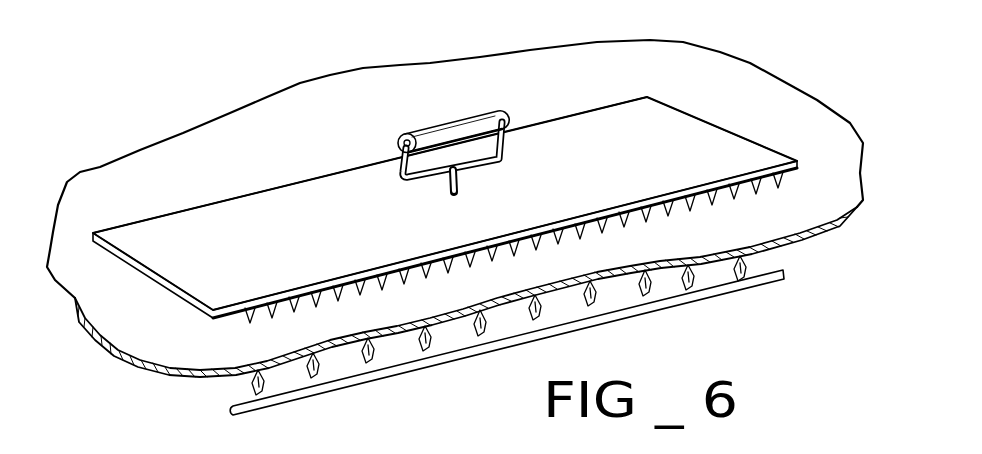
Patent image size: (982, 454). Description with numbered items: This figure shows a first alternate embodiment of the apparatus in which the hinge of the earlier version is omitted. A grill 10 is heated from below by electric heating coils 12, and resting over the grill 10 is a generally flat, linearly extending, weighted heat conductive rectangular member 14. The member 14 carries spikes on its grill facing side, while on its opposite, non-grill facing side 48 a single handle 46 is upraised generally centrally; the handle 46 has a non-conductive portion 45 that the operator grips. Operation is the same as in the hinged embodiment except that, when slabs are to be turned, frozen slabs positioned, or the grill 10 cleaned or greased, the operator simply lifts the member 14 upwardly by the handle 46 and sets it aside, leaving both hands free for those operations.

The grill 10 is at (164, 329).
The electric heating coils 12 is at (452, 360).
The weighted heat conductive rectangular member 14 is at (636, 163).
The non-conductive portion 45 is at (427, 130).
The handle 46 is at (476, 95).
The non-grill facing side 48 is at (263, 213).